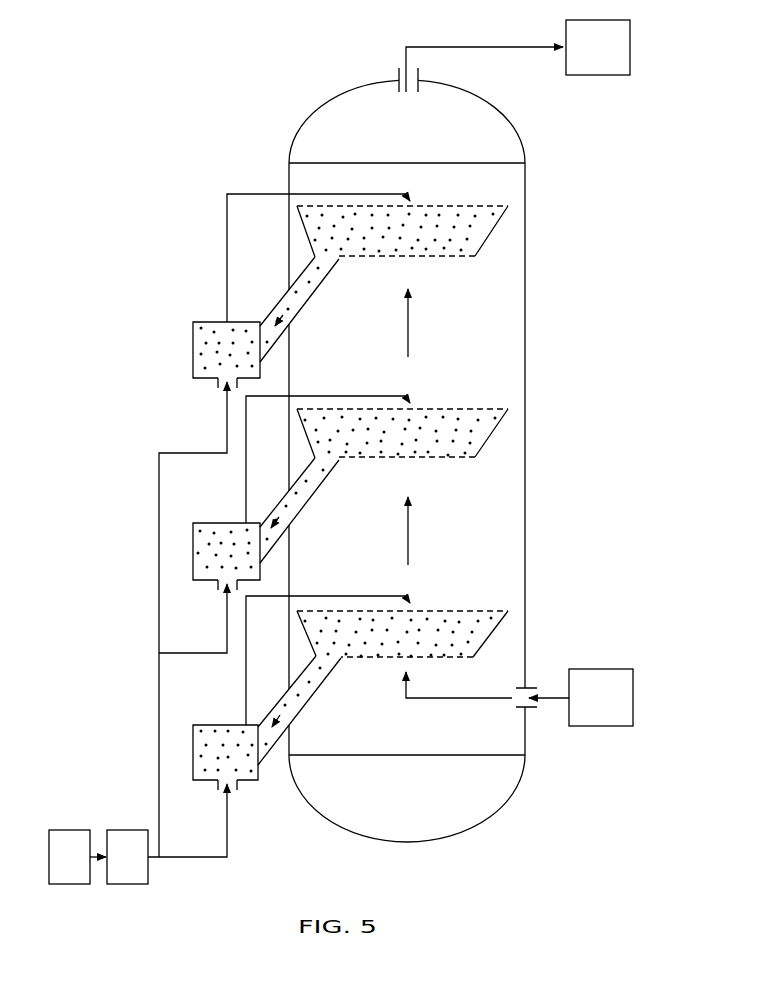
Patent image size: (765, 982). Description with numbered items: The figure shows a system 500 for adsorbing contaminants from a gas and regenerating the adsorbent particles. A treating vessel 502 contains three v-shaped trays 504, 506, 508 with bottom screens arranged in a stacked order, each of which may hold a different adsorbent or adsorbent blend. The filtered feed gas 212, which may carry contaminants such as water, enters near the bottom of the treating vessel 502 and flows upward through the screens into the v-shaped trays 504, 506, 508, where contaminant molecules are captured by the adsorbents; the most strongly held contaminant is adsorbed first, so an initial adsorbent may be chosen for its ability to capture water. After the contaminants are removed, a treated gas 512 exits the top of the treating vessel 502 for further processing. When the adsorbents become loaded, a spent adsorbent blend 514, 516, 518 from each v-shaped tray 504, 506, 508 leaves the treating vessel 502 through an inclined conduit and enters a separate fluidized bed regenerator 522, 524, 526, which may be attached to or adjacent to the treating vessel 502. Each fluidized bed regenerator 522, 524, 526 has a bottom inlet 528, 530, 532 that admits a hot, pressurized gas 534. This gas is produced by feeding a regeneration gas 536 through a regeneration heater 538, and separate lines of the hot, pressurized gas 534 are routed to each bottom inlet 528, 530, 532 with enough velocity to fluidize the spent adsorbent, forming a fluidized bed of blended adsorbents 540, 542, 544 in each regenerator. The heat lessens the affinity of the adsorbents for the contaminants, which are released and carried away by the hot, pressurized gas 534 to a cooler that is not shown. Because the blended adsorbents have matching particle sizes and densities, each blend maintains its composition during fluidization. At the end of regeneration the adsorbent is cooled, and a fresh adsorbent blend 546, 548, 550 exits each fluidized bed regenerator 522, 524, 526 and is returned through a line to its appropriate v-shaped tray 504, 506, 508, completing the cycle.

The system 500 is at (353, 906).
The treating vessel 502 is at (518, 132).
The v-shaped tray 504 is at (490, 633).
The v-shaped tray 506 is at (492, 433).
The v-shaped tray 508 is at (492, 232).
The treated gas 512 is at (612, 57).
The spent adsorbent blend 514 is at (293, 702).
The spent adsorbent blend 516 is at (298, 505).
The spent adsorbent blend 518 is at (298, 303).
The fluidized bed regenerator 522 is at (193, 753).
The fluidized bed regenerator 524 is at (193, 549).
The fluidized bed regenerator 526 is at (194, 357).
The bottom inlet 528 is at (238, 781).
The bottom inlet 530 is at (238, 581).
The bottom inlet 532 is at (238, 379).
The hot, pressurized gas 534 is at (227, 425).
The regeneration gas 536 is at (84, 867).
The regeneration heater 538 is at (142, 867).
The fluidized bed of blended adsorbents 540 is at (218, 767).
The fluidized bed of blended adsorbents 542 is at (217, 558).
The fluidized bed of blended adsorbents 544 is at (210, 345).
The fresh adsorbent blend 546 is at (360, 593).
The fresh adsorbent blend 548 is at (352, 393).
The fresh adsorbent blend 550 is at (352, 193).
The filtered feed gas 212 is at (615, 708).